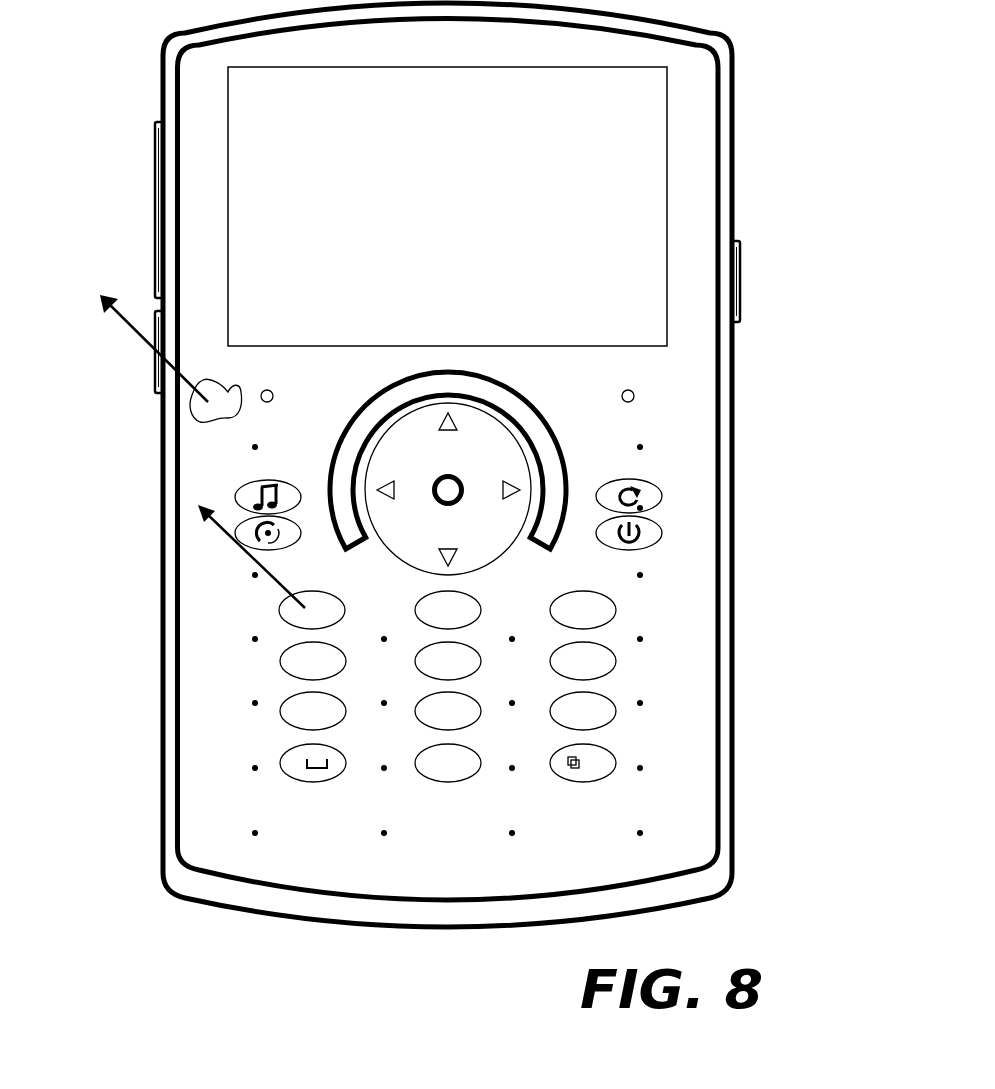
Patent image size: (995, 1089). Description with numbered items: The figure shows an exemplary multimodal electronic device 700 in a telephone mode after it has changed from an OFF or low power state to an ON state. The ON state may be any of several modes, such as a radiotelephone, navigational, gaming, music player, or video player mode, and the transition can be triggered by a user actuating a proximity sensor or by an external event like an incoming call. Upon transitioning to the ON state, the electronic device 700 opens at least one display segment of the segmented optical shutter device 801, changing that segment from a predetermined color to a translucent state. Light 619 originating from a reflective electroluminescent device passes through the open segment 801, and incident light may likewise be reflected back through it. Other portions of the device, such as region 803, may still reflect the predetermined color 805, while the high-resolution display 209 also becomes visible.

The high-resolution display 209 is at (589, 193).
The light 619 is at (277, 580).
The electronic device 700 is at (98, 697).
The segmented optical shutter device 801 is at (316, 639).
The region 803 is at (228, 395).
The predetermined color 805 is at (128, 322).